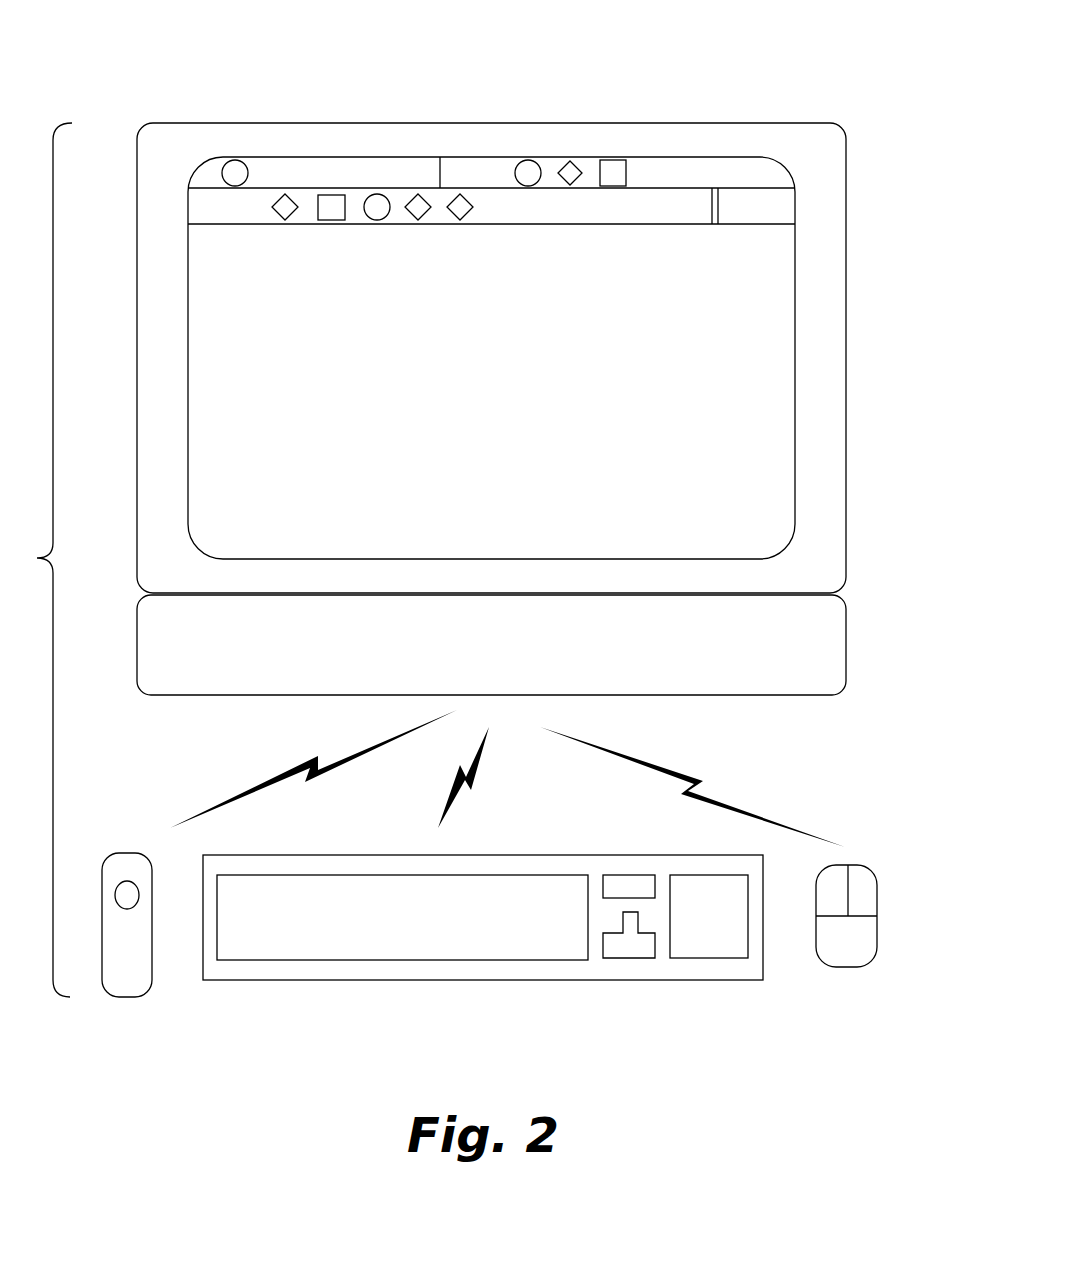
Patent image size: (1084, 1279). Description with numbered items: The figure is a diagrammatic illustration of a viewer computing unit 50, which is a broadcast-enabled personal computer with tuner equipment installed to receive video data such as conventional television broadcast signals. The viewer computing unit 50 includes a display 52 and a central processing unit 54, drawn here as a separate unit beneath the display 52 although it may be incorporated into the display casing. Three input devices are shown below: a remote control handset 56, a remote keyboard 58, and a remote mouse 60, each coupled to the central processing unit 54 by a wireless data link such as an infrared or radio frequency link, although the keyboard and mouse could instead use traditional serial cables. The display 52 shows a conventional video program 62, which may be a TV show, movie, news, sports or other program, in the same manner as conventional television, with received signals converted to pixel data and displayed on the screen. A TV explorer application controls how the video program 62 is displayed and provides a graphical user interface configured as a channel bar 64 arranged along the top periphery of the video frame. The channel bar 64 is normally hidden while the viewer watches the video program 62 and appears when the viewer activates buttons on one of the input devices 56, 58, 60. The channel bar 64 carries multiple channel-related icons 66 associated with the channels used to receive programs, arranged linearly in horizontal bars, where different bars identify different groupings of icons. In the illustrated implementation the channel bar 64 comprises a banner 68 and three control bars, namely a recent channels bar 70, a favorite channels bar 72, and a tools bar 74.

The viewer computing unit 50 is at (628, 72).
The display 52 is at (811, 157).
The central processing unit 54 is at (810, 660).
The remote control handset 56 is at (137, 978).
The remote keyboard 58 is at (505, 945).
The remote mouse 60 is at (843, 947).
The video program 62 is at (743, 342).
The channel bar 64 is at (489, 231).
The channel-related icons 66 is at (613, 172).
The banner 68 is at (256, 162).
The recent channels bar 70 is at (509, 162).
The favorite channels bar 72 is at (255, 214).
The tools bar 74 is at (745, 219).